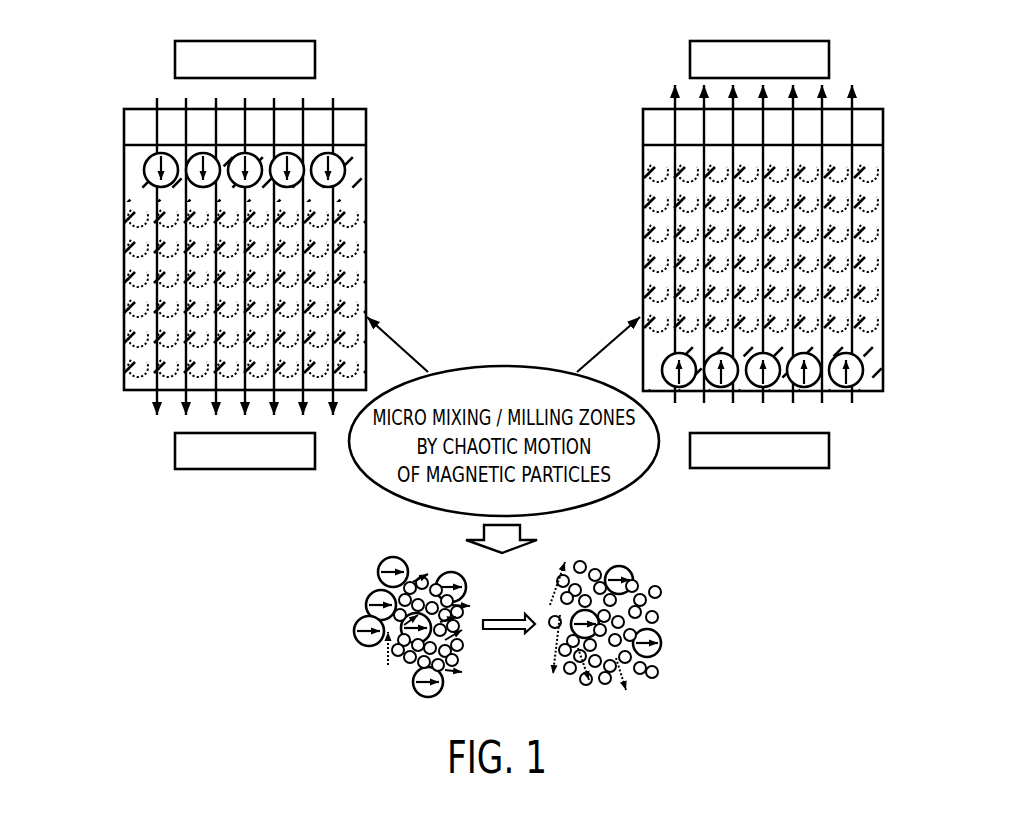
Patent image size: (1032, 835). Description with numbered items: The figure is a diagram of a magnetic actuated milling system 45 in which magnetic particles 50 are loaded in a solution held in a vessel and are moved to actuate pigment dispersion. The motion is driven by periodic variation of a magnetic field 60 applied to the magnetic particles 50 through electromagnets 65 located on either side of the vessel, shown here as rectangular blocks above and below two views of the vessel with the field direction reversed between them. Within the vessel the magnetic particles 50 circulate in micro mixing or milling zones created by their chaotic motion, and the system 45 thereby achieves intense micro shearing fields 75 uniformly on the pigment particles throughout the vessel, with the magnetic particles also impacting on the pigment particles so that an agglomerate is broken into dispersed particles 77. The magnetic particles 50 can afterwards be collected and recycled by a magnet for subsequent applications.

The milling system 45 is at (962, 90).
The magnetic particles 50 is at (342, 164).
The magnetic field 60 is at (302, 287).
The electromagnets 65 is at (175, 58).
The micro shearing fields 75 is at (332, 596).
The dispersed particles 77 is at (598, 680).